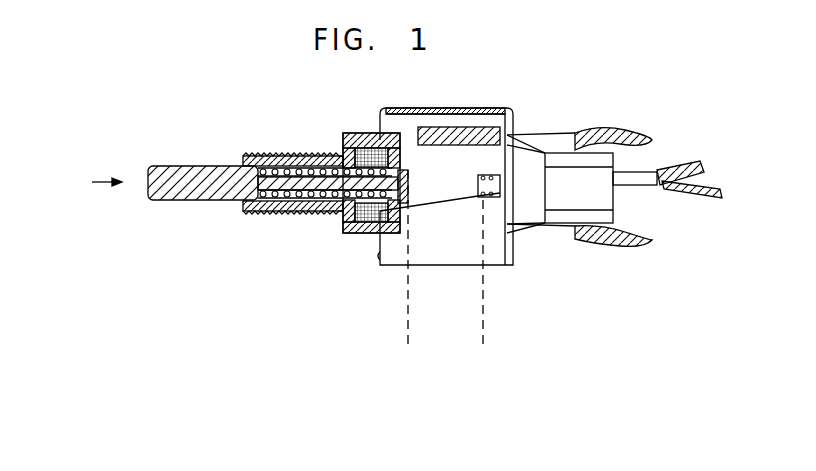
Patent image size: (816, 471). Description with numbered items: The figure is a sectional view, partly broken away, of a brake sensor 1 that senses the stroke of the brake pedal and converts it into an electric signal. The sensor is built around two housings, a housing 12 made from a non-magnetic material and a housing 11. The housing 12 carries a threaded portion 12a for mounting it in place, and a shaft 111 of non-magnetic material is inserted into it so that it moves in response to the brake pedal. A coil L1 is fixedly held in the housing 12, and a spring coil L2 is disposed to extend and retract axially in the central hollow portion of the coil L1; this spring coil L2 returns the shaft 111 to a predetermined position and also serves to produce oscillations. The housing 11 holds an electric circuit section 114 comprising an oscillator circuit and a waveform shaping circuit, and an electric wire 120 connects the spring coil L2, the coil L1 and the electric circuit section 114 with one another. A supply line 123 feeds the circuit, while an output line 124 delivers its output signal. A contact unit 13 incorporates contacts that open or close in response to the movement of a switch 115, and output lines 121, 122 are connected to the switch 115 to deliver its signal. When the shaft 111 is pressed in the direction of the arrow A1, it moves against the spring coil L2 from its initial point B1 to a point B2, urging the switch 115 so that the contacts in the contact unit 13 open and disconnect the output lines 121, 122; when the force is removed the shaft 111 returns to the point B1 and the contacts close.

The brake sensor 1 is at (500, 95).
The shaft 111 is at (182, 172).
The spring coil L2 is at (283, 156).
The threaded portion 12a is at (277, 217).
The housing 12 is at (366, 185).
The coil L1 is at (365, 160).
The electric wire 120 is at (407, 130).
The electric circuit section 114 is at (450, 145).
The switch 115 is at (479, 195).
The housing 11 is at (442, 257).
The contact unit 13 is at (613, 216).
The supply line 123 is at (649, 142).
The output line 124 is at (649, 240).
The output line 121 is at (702, 170).
The output line 122 is at (720, 191).
The arrow A1 is at (85, 182).
The initial point B1 is at (412, 369).
The point B2 is at (487, 369).